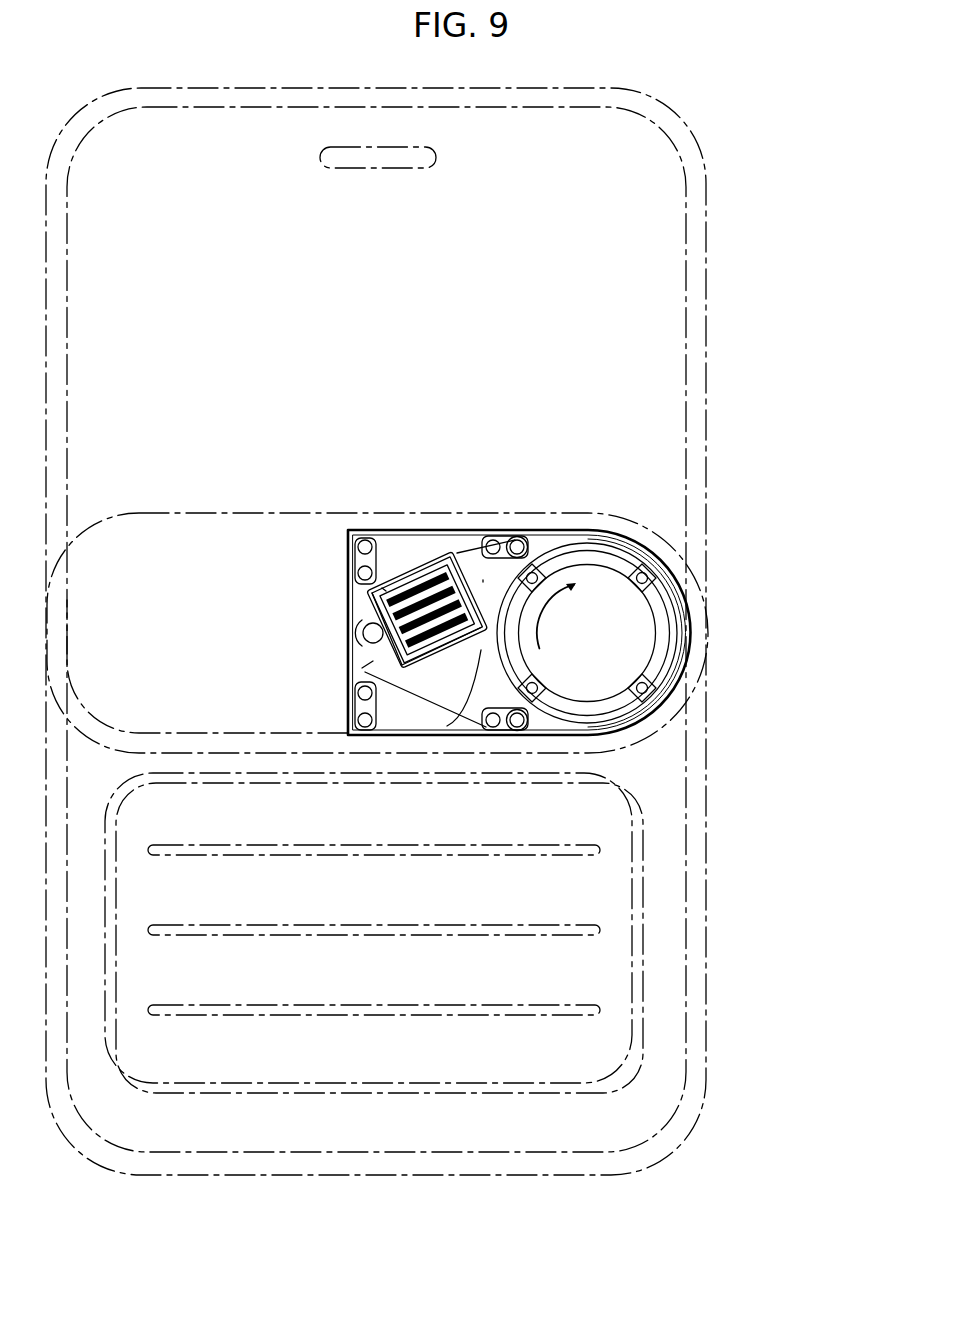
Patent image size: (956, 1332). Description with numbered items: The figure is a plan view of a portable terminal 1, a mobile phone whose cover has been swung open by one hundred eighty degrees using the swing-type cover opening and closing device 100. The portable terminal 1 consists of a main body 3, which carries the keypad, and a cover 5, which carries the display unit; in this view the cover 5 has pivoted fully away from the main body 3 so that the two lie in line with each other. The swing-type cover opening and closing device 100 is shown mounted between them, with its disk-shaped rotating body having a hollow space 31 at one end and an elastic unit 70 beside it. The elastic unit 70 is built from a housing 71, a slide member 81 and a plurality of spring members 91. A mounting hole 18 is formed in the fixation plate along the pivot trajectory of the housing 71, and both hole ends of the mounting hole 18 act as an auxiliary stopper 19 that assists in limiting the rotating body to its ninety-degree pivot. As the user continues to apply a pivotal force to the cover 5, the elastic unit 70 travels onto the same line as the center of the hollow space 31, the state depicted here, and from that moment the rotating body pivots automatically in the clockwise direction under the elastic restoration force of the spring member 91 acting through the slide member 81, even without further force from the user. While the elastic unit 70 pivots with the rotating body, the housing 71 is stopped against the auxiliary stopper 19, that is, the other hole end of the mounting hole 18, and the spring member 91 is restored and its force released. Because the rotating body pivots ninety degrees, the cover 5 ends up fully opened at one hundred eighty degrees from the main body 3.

The portable terminal 1 is at (459, 631).
The main body case 3 is at (706, 802).
The cover case 5 is at (835, 758).
The swing-type cover opening and closing device 100 is at (515, 609).
The hollow space 31 is at (609, 622).
The auxiliary stopper 19 is at (415, 575).
The spring member 91 is at (437, 577).
The slide member 81 is at (483, 580).
The housing 71 is at (382, 588).
The mounting hole 18 is at (404, 692).
The elastic unit 70 is at (431, 665).